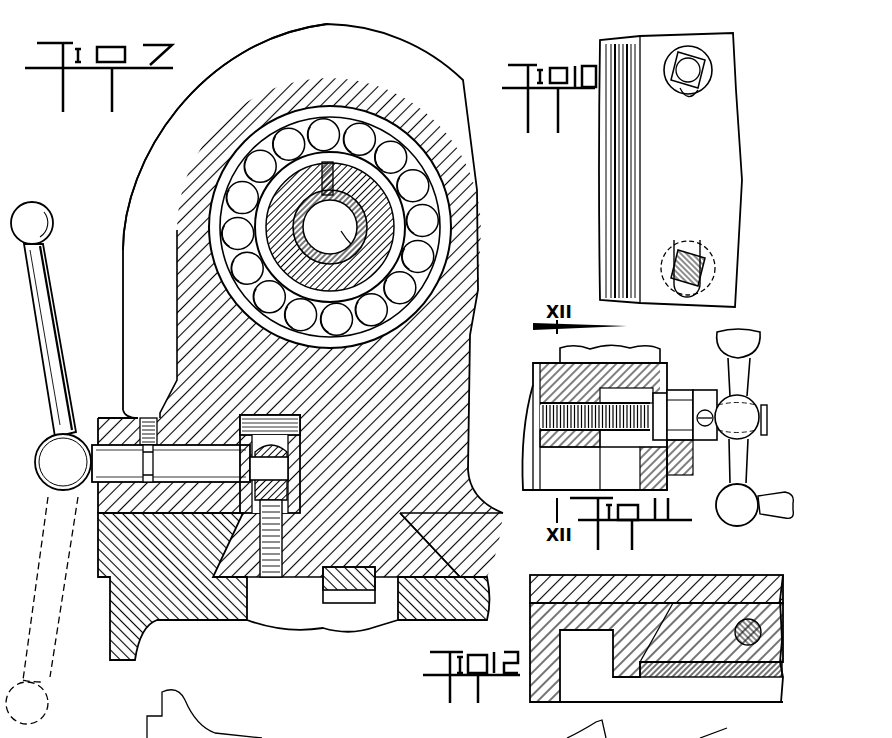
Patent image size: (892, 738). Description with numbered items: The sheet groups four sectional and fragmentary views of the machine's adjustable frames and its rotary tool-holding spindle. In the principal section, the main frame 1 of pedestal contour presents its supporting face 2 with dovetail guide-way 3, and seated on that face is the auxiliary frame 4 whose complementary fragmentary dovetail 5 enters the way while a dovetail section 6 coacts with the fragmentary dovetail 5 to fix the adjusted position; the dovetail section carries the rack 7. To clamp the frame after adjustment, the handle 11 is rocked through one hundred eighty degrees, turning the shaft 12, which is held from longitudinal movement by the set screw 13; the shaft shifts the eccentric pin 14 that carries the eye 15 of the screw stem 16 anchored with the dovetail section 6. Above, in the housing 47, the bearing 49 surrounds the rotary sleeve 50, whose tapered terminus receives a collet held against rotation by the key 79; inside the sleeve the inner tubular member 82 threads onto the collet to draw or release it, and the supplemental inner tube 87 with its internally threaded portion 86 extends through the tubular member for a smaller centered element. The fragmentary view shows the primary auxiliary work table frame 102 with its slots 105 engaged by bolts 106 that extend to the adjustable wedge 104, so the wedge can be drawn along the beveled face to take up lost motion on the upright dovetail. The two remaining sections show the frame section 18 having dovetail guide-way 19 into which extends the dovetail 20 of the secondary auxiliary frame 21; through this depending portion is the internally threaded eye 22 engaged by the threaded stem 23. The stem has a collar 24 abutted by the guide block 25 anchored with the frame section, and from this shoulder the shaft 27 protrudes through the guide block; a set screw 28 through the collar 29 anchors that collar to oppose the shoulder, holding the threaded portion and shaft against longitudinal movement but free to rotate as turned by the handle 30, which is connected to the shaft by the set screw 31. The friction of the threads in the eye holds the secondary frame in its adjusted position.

In FIG. 7, the main frame 1 is at (112, 628).
In FIG. 7, the supporting face 2 is at (97, 506).
In FIG. 7, the dovetail guide-way 3 is at (435, 598).
In FIG. 7, the auxiliary frame 4 is at (470, 440).
In FIG. 7, the fragmentary dovetail 5 is at (413, 582).
In FIG. 7, the dovetail section 6 is at (262, 578).
In FIG. 7, the rack 7 is at (330, 604).
In FIG. 7, the handle 11 is at (38, 684).
In FIG. 7, the shaft 12 is at (112, 418).
In FIG. 7, the set screw 13 is at (160, 418).
In FIG. 7, the eccentric pin 14 is at (171, 463).
In FIG. 7, the eye 15 is at (250, 461).
In FIG. 7, the screw stem 16 is at (270, 578).
In FIG. 11, the frame section 18 is at (655, 380).
In FIG. 12, the frame section 18 is at (752, 705).
In FIG. 11, the dovetail guide-way 19 is at (615, 448).
In FIG. 12, the dovetail guide-way 19 is at (655, 650).
In FIG. 11, the dovetail 20 is at (572, 450).
In FIG. 12, the dovetail 20 is at (660, 684).
In FIG. 11, the secondary auxiliary frame 21 is at (545, 365).
In FIG. 12, the secondary auxiliary frame 21 is at (735, 578).
In FIG. 11, the internally threaded eye 22 is at (540, 400).
In FIG. 12, the internally threaded eye 22 is at (716, 684).
In FIG. 11, the threaded stem 23 is at (540, 420).
In FIG. 12, the threaded stem 23 is at (780, 575).
In FIG. 11, the collar 24 is at (660, 395).
In FIG. 11, the guide block 25 is at (685, 485).
In FIG. 11, the shaft 27 is at (745, 395).
In FIG. 11, the set screw 28 is at (735, 412).
In FIG. 11, the collar 29 is at (770, 420).
In FIG. 11, the handle 30 is at (790, 492).
In FIG. 11, the set screw 31 is at (737, 417).
In FIG. 7, the housing 47 is at (143, 152).
In FIG. 7, the bearing 49 is at (442, 244).
In FIG. 7, the sleeve 50 is at (393, 222).
In FIG. 7, the key 79 is at (350, 158).
In FIG. 7, the inner tubular member 82 is at (330, 227).
In FIG. 7, the internally threaded portion 86 is at (331, 236).
In FIG. 7, the supplemental inner tube 87 is at (297, 224).
In FIG. 10, the primary auxiliary work table frame 102 is at (710, 152).
In FIG. 10, the adjustable wedge 104 is at (738, 212).
In FIG. 10, the slot 105 is at (700, 240).
In FIG. 10, the bolt 106 is at (700, 280).